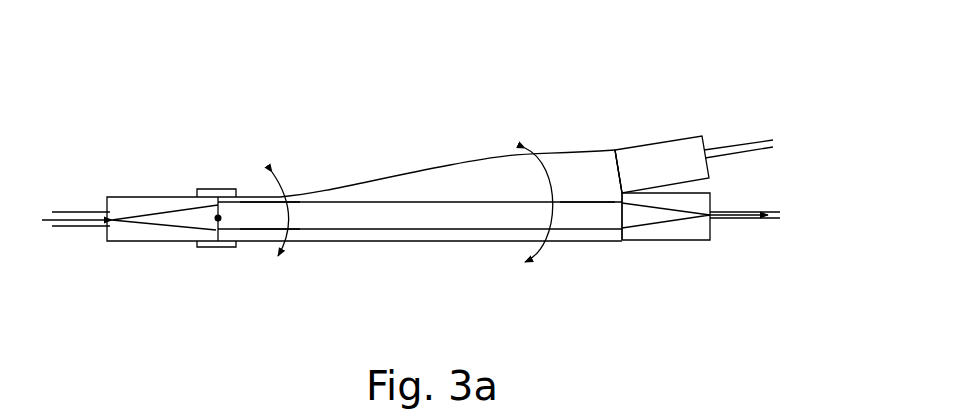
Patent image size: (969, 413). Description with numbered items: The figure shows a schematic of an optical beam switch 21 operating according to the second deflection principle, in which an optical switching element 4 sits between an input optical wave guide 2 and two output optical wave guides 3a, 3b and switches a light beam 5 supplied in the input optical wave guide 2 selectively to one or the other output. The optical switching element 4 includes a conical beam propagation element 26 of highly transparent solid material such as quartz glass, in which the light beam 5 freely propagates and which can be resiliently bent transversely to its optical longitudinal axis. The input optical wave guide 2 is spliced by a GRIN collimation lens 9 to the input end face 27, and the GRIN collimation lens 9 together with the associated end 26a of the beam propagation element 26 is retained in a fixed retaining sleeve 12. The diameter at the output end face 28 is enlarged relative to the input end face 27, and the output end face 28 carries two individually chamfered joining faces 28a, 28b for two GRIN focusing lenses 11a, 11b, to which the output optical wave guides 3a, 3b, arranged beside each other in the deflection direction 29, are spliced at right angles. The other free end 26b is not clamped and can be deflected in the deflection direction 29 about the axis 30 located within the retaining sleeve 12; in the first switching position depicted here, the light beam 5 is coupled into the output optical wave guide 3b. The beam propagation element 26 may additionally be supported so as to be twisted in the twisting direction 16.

The optical beam switch 21 is at (147, 122).
The optical switching element 4 is at (397, 127).
The GRIN collimation lens 9 is at (140, 235).
The input optical wave guide 2 is at (73, 205).
The light beam 5 is at (93, 227).
The beam propagation element 26 is at (480, 239).
The end of the beam propagation element 26a is at (235, 220).
The free end of the beam propagation element 26b is at (590, 183).
The retaining sleeve 12 is at (222, 189).
The input end face 27 is at (212, 243).
The axis 30 is at (215, 216).
The deflection direction 29 is at (283, 193).
The twisting direction 16 is at (540, 135).
The output end face 28 is at (621, 196).
The joining face 28a is at (612, 169).
The joining face 28b is at (619, 222).
The GRIN focusing lens 11a is at (682, 153).
The output optical wave guide 3a is at (740, 143).
The GRIN focusing lens 11b is at (683, 241).
The output optical wave guide 3b is at (738, 223).